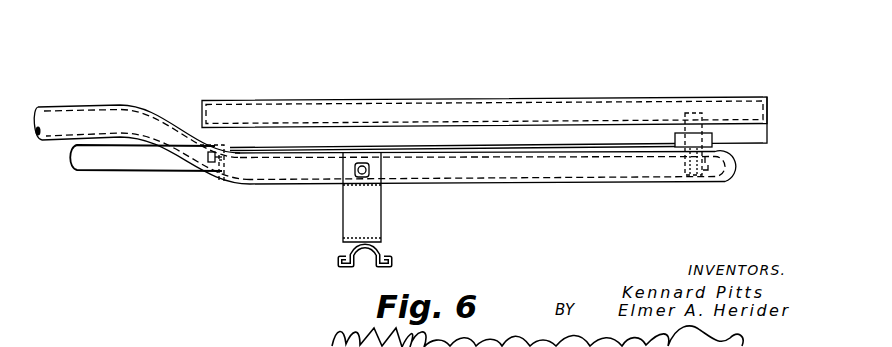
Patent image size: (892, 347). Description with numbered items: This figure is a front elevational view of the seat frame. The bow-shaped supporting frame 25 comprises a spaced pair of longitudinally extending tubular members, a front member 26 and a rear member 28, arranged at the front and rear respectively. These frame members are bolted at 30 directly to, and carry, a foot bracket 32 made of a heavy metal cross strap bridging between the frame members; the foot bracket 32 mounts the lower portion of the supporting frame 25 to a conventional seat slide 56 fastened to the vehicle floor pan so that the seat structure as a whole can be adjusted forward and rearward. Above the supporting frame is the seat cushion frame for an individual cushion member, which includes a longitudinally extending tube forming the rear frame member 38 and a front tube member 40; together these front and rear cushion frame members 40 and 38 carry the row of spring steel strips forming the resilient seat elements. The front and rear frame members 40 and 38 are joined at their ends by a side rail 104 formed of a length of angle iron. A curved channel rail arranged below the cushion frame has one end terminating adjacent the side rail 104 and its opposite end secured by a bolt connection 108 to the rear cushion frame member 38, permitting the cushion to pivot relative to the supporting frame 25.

The bow-shaped supporting frame 25 is at (110, 105).
The front longitudinally extending member 26 is at (204, 160).
The rear longitudinally extending member 28 is at (77, 156).
The bolt 30 is at (357, 178).
The foot bracket 32 is at (382, 206).
The rear frame member 38 is at (748, 139).
The front tube member 40 is at (578, 100).
The seat slide 56 is at (394, 256).
The side rail 104 is at (198, 112).
The bolt connection 108 is at (672, 122).